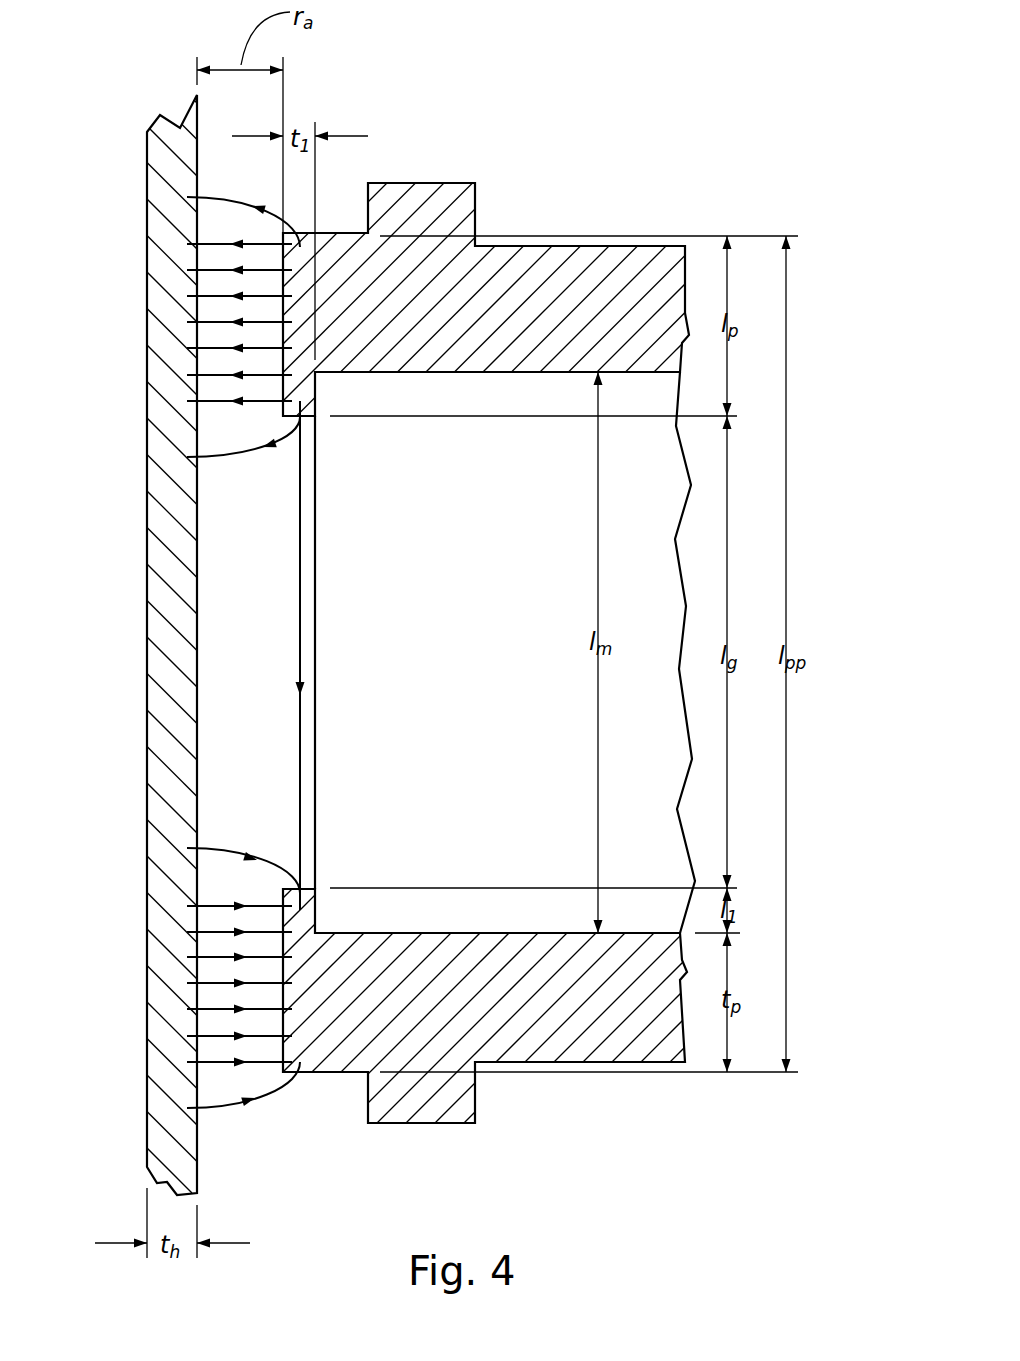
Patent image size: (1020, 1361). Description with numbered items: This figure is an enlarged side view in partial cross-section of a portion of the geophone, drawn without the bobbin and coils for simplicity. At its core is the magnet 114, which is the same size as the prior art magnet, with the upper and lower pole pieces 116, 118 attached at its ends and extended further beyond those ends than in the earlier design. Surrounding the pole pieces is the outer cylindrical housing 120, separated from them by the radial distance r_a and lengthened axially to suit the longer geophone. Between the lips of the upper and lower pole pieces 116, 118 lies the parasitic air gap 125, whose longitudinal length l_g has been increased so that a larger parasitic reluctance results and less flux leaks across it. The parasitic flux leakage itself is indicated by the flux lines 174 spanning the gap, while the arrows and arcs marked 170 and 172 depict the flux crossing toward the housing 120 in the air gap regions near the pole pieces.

The magnet 114 is at (314, 773).
The upper pole piece 116 is at (590, 245).
The lower pole piece 118 is at (545, 1062).
The outer cylindrical housing 120 is at (147, 690).
The parasitic air gap 125 is at (377, 652).
The magnetic flux lines 170 is at (217, 320).
The fringing flux paths 172 is at (215, 425).
The flux lines 174 is at (300, 607).